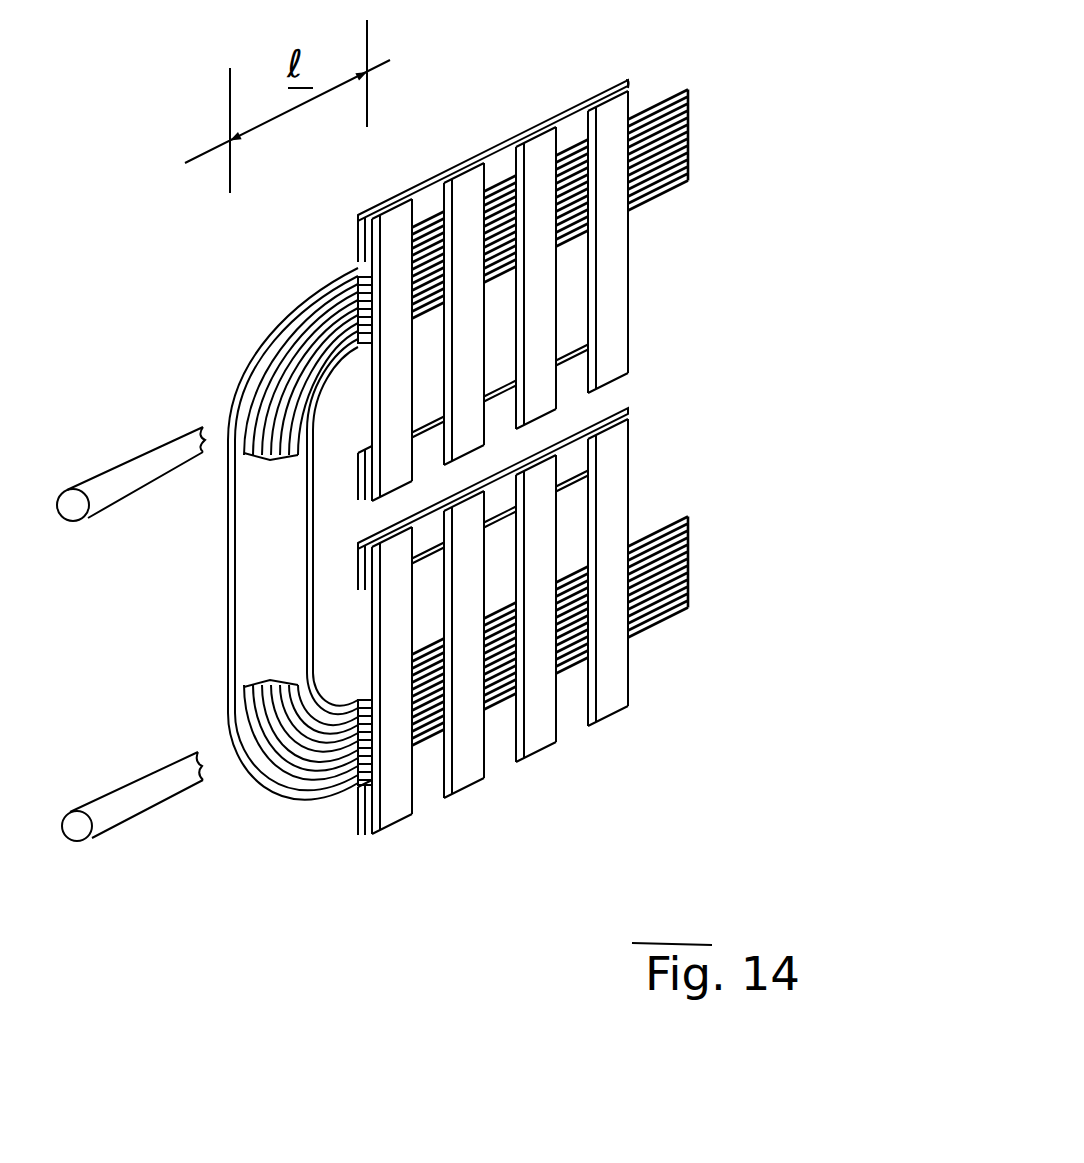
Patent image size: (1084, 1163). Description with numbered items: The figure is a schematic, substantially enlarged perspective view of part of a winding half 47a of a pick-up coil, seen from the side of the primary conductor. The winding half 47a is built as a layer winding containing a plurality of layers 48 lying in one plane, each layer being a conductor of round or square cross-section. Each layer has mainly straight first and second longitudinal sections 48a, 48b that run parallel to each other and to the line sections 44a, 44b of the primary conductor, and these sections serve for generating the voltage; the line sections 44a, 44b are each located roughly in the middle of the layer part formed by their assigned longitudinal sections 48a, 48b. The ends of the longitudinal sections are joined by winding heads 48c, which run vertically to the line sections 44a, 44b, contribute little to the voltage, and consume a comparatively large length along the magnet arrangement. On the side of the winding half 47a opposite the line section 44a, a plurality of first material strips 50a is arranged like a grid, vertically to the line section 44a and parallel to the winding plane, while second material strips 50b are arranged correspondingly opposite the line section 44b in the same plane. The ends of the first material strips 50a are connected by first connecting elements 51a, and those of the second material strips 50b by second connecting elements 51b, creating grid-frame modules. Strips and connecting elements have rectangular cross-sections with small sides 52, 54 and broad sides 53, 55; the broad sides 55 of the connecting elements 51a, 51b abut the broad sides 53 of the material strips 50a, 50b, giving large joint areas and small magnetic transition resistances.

The line section 44a is at (125, 473).
The line section 44b is at (123, 805).
The winding half 47a is at (798, 148).
The layers 48 is at (311, 389).
The first longitudinal sections 48a is at (670, 103).
The second longitudinal sections 48b is at (680, 542).
The winding heads 48c is at (310, 620).
The first material strips 50a is at (556, 307).
The second material strips 50b is at (611, 720).
The first connecting elements 51a is at (491, 142).
The second connecting elements 51b is at (567, 474).
The small side 52 is at (582, 120).
The broad side 53 is at (612, 252).
The small side 54 is at (419, 190).
The broad side 55 is at (428, 203).